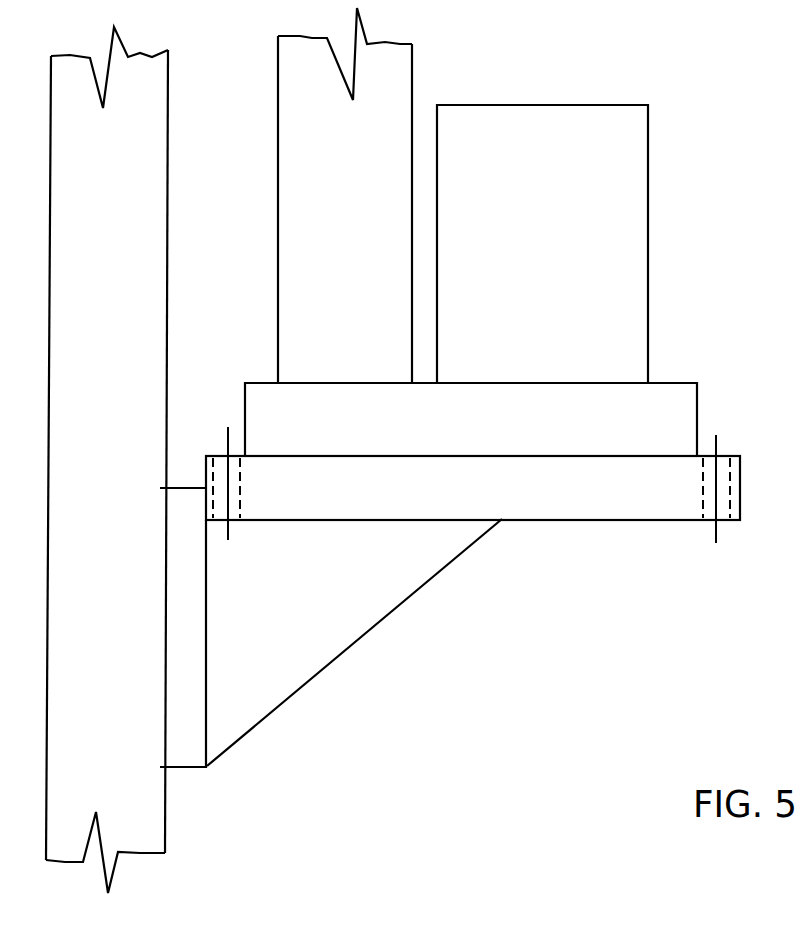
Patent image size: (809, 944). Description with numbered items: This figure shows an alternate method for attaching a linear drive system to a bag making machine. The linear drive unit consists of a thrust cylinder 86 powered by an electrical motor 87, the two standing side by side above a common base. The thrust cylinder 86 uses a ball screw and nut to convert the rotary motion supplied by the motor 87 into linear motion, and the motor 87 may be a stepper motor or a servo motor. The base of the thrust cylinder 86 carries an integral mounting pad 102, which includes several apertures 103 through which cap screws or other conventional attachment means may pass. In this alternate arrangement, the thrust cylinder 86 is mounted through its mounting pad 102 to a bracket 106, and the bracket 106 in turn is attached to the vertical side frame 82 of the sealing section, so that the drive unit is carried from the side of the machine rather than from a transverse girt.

The side frame 82 is at (120, 397).
The thrust cylinder 86 is at (358, 302).
The electrical motor 87 is at (545, 323).
The mounting pad 102 is at (450, 451).
The apertures 103 is at (222, 453).
The bracket 106 is at (403, 603).